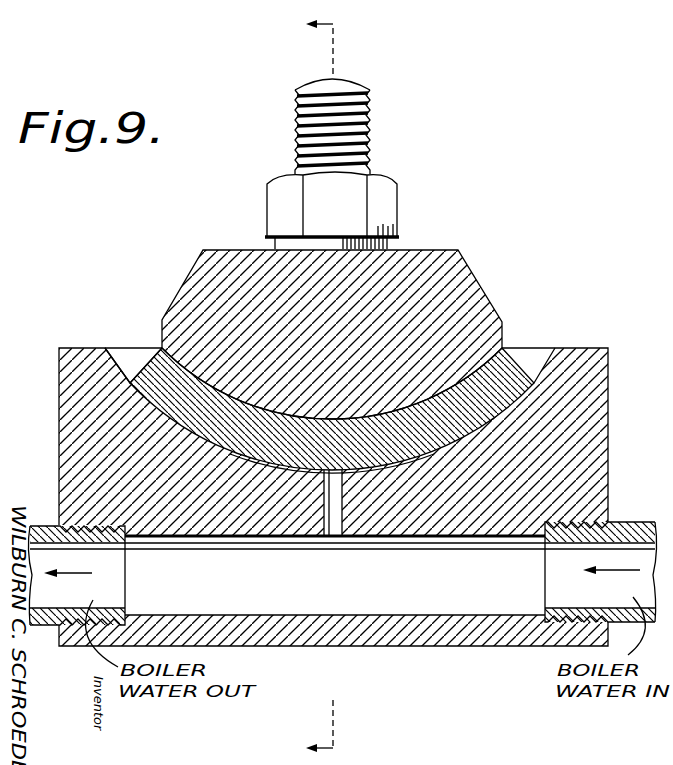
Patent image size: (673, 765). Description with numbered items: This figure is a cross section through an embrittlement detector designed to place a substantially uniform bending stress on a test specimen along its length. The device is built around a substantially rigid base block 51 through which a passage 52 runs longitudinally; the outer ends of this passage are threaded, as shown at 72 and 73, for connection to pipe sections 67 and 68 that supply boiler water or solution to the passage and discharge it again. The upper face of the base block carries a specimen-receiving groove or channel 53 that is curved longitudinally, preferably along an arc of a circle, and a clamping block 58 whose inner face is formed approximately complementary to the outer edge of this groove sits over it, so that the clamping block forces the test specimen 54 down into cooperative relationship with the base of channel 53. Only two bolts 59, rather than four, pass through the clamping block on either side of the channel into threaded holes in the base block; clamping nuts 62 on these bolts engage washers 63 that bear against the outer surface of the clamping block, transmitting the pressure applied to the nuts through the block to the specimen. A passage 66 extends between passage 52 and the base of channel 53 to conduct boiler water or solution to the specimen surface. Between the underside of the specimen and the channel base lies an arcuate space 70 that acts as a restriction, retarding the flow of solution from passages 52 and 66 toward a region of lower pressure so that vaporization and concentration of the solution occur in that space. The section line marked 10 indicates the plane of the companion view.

The section line 10 is at (341, 387).
The base block 51 is at (590, 452).
The passage 52 is at (335, 576).
The specimen-receiving groove or channel 53 is at (585, 331).
The test specimen 54 is at (147, 362).
The clamping block 58 is at (455, 272).
The bolts 59 is at (373, 103).
The clamping nuts 62 is at (385, 192).
The washers 63 is at (383, 243).
The passage 66 is at (331, 537).
The pipe section 67 is at (592, 600).
The pipe section 68 is at (127, 598).
The arcuate space 70 is at (292, 472).
The threaded end 72 is at (88, 540).
The threaded end 73 is at (567, 541).